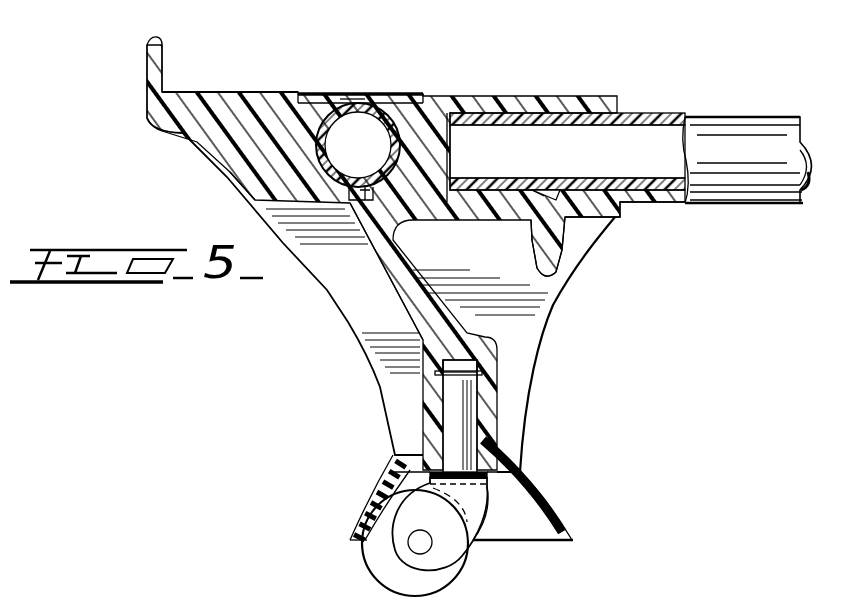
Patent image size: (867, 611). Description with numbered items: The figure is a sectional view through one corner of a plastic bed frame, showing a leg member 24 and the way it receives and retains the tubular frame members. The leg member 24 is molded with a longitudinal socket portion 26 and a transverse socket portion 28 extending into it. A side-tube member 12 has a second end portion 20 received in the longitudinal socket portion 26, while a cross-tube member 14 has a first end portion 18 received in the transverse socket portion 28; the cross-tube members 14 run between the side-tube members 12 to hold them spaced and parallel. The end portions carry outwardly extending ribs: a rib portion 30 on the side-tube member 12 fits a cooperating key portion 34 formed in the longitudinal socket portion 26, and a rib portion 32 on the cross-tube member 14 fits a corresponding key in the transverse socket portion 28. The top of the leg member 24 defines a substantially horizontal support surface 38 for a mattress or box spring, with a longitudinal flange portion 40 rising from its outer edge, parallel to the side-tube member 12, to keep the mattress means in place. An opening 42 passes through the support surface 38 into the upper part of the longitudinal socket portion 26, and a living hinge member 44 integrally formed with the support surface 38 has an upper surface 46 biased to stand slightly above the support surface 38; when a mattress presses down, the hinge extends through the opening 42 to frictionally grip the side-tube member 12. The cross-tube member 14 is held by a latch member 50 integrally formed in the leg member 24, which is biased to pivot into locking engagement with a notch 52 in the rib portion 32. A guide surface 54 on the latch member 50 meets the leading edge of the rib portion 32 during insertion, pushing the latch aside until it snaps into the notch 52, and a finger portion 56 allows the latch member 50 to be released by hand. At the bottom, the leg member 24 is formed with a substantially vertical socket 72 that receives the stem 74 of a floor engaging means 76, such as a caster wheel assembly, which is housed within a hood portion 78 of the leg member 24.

The side-tube member 12 is at (340, 170).
The cross-tube member 14 is at (766, 112).
The first end portion 18 is at (632, 118).
The second end portion 20 is at (345, 105).
The leg member 24 is at (338, 322).
The longitudinal socket portion 26 is at (313, 172).
The transverse socket portion 28 is at (546, 125).
The rib portion 30 is at (365, 200).
The rib portion 32 is at (717, 196).
The key portion 34 is at (372, 196).
The support surface 38 is at (230, 92).
The longitudinal flange portion 40 is at (162, 58).
The opening 42 is at (414, 92).
The living hinge member 44 is at (383, 94).
The upper surface 46 is at (352, 93).
The latch member 50 is at (600, 218).
The notch 52 is at (552, 186).
The guide surface 54 is at (540, 184).
The finger portion 56 is at (550, 255).
The vertical socket 72 is at (452, 393).
The stem 74 is at (465, 410).
The floor engaging means 76 is at (368, 565).
The hood portion 78 is at (540, 490).